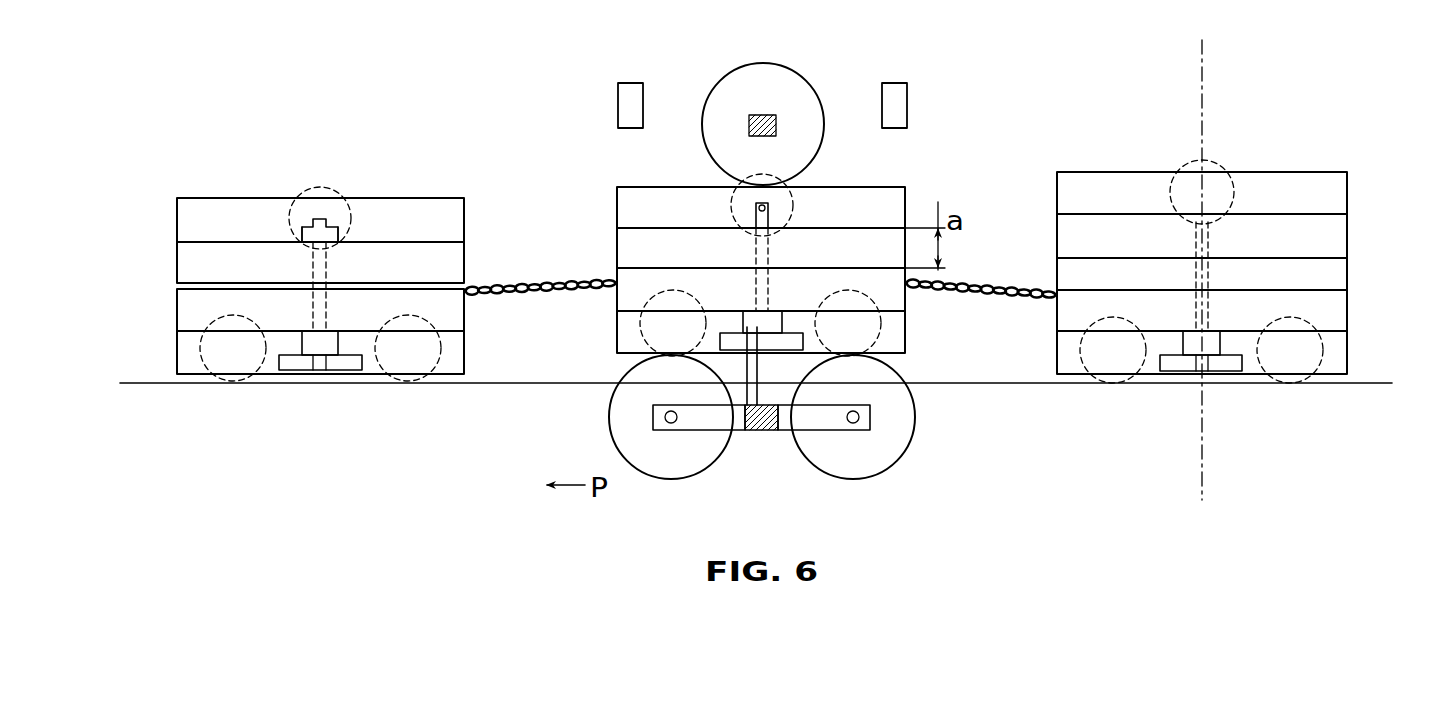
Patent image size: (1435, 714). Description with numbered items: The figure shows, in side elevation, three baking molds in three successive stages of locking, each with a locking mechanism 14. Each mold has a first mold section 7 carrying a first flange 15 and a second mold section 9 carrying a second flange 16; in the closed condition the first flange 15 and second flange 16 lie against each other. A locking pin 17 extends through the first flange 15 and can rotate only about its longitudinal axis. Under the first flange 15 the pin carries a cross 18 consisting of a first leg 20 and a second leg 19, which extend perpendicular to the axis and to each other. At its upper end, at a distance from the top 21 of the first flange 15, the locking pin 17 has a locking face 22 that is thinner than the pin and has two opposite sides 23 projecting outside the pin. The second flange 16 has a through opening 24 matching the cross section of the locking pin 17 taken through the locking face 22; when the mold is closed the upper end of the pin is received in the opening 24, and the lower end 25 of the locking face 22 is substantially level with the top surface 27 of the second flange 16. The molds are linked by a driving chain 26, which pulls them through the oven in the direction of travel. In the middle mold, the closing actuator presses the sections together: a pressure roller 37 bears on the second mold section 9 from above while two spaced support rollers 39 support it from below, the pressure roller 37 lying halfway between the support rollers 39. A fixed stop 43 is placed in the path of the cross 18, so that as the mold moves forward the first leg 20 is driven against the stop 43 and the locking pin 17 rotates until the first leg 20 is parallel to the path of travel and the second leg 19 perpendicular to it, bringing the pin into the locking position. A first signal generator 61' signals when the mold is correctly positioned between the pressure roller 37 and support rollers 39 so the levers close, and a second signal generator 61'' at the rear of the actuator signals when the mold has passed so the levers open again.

The first mold section 7 is at (177, 352).
The second mold section 9 is at (177, 210).
The locking mechanism 14 is at (322, 178).
The first flange 15 is at (177, 307).
The second flange 16 is at (177, 259).
The locking pin 17 is at (346, 214).
The cross 18 is at (328, 392).
The second leg 19 is at (316, 368).
The first leg 20 is at (343, 368).
The top of the first flange 21 is at (1347, 290).
The locking face 22 is at (785, 200).
The opposite sides of the locking face 23 is at (302, 234).
The through opening 24 is at (1195, 240).
The lower end of the locking face 25 is at (770, 209).
The driving chain 26 is at (541, 280).
The top surface of the second flange 27 is at (673, 221).
The pressure roller 37 is at (763, 88).
The support rollers 39 is at (622, 417).
The fixed stop 43 is at (742, 370).
The first signal generator 61' is at (585, 105).
The second signal generator 61'' is at (928, 105).